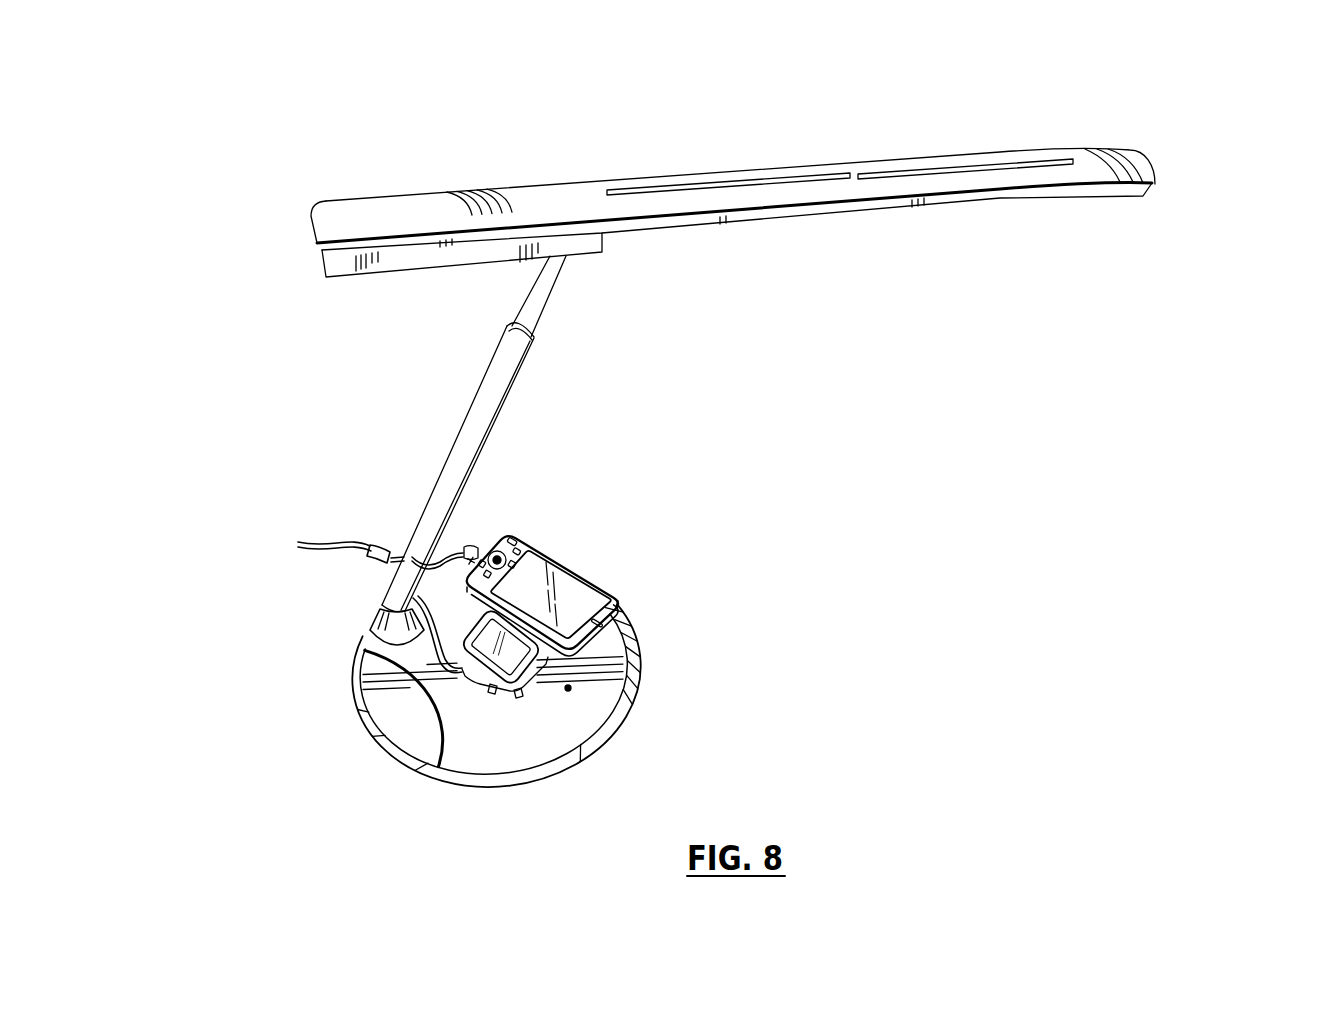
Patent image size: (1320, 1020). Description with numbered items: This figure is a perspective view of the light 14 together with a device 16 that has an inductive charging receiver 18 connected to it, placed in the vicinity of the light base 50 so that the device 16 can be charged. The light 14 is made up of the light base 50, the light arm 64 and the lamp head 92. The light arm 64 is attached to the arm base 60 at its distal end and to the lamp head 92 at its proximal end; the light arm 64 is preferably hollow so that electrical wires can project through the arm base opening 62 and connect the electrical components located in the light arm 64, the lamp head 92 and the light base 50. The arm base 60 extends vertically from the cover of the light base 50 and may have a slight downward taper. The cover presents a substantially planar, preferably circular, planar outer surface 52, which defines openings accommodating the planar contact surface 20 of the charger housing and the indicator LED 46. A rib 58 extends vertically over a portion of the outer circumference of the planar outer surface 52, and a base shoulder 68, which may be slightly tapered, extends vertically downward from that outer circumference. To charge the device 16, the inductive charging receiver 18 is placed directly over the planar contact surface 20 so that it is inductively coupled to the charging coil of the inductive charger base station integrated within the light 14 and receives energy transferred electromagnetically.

The light 14 is at (266, 144).
The device 16 is at (562, 562).
The inductive charging receiver 18 is at (460, 672).
The planar contact surface 20 is at (470, 687).
The indicator LED 46 is at (568, 690).
The light base 50 is at (643, 630).
The planar outer surface 52 is at (605, 688).
The rib 58 is at (352, 698).
The arm base 60 is at (372, 625).
The arm base opening 62 is at (380, 604).
The light arm 64 is at (514, 457).
The base shoulder 68 is at (624, 706).
The lamp head 92 is at (1117, 130).